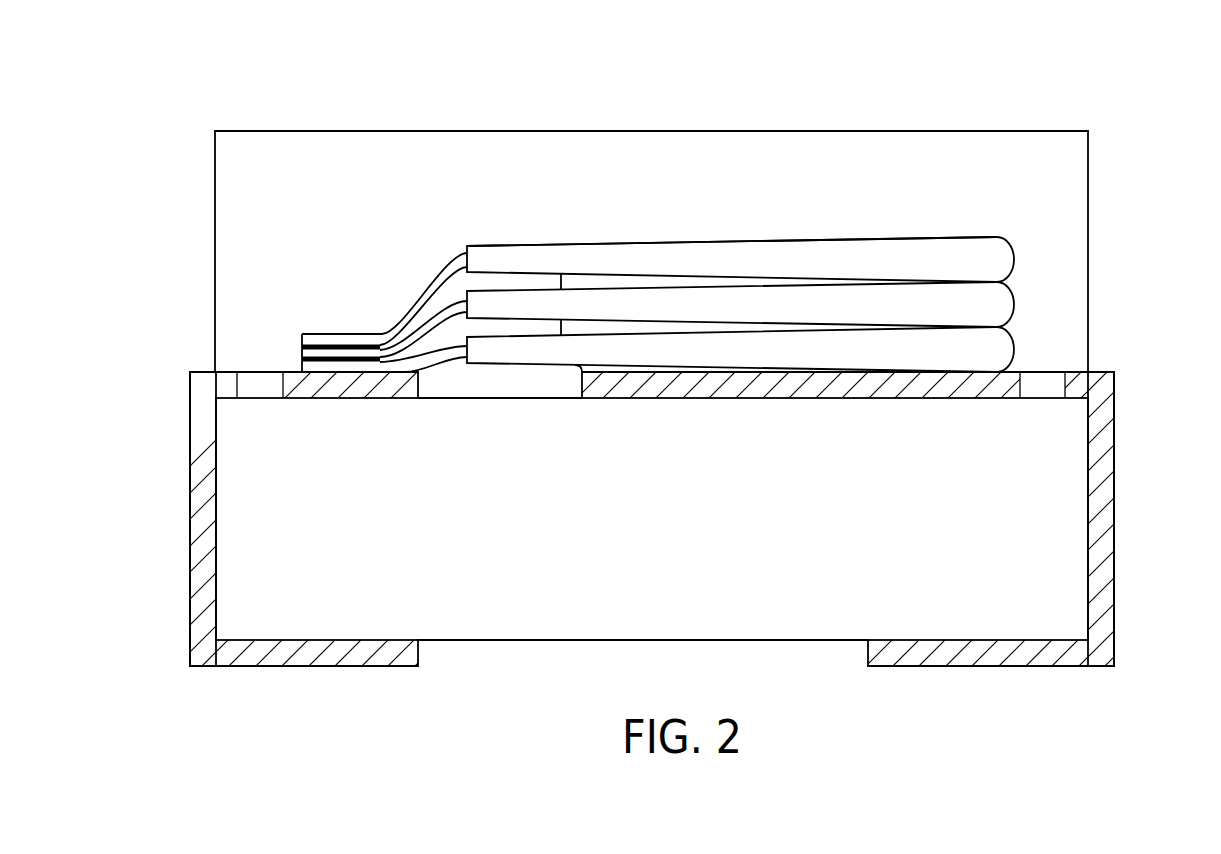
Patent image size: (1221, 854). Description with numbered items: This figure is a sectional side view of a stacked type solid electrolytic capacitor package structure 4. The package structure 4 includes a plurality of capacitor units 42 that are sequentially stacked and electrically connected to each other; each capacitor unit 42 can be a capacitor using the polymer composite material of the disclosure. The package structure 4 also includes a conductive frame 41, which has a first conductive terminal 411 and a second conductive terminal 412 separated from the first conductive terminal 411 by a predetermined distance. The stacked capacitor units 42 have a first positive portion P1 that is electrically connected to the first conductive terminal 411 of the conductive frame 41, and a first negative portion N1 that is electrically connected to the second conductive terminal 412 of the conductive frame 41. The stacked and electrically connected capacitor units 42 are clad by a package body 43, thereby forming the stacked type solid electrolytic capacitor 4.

The stacked type solid electrolytic capacitor package structure 4 is at (182, 68).
The conductive frame 41 is at (192, 455).
The first conductive terminal 411 is at (208, 540).
The second conductive terminal 412 is at (1095, 525).
The capacitor unit 42 is at (1011, 253).
The package body 43 is at (222, 236).
The first negative portion N1 is at (905, 237).
The first positive portion P1 is at (423, 283).